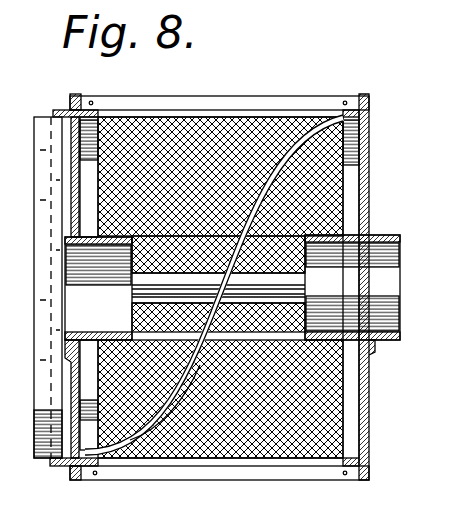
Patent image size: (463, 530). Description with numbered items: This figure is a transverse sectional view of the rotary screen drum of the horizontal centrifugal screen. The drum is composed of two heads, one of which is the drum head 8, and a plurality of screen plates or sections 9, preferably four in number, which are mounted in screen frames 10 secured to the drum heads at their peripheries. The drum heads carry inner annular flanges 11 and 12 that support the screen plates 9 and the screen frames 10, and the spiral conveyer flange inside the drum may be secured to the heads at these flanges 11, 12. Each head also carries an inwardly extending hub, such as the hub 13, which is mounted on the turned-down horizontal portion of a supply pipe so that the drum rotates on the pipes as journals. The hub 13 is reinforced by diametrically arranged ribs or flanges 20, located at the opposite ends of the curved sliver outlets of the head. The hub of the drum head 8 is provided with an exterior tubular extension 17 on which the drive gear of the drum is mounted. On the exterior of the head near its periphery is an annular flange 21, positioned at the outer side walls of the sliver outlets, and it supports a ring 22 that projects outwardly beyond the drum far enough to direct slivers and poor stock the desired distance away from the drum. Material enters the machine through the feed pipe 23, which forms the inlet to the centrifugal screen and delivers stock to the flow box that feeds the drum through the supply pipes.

The drum head 8 is at (372, 375).
The screen plates 9 is at (162, 115).
The screen frames 10 is at (236, 95).
The inner annular flange 11 is at (83, 394).
The inner annular flange 12 is at (214, 285).
The hub 13 is at (218, 275).
The exterior tubular extension 17 is at (392, 232).
The ribs 20 is at (83, 208).
The annular flange 21 is at (58, 112).
The ring 22 is at (52, 432).
The feed pipe 23 is at (176, 406).